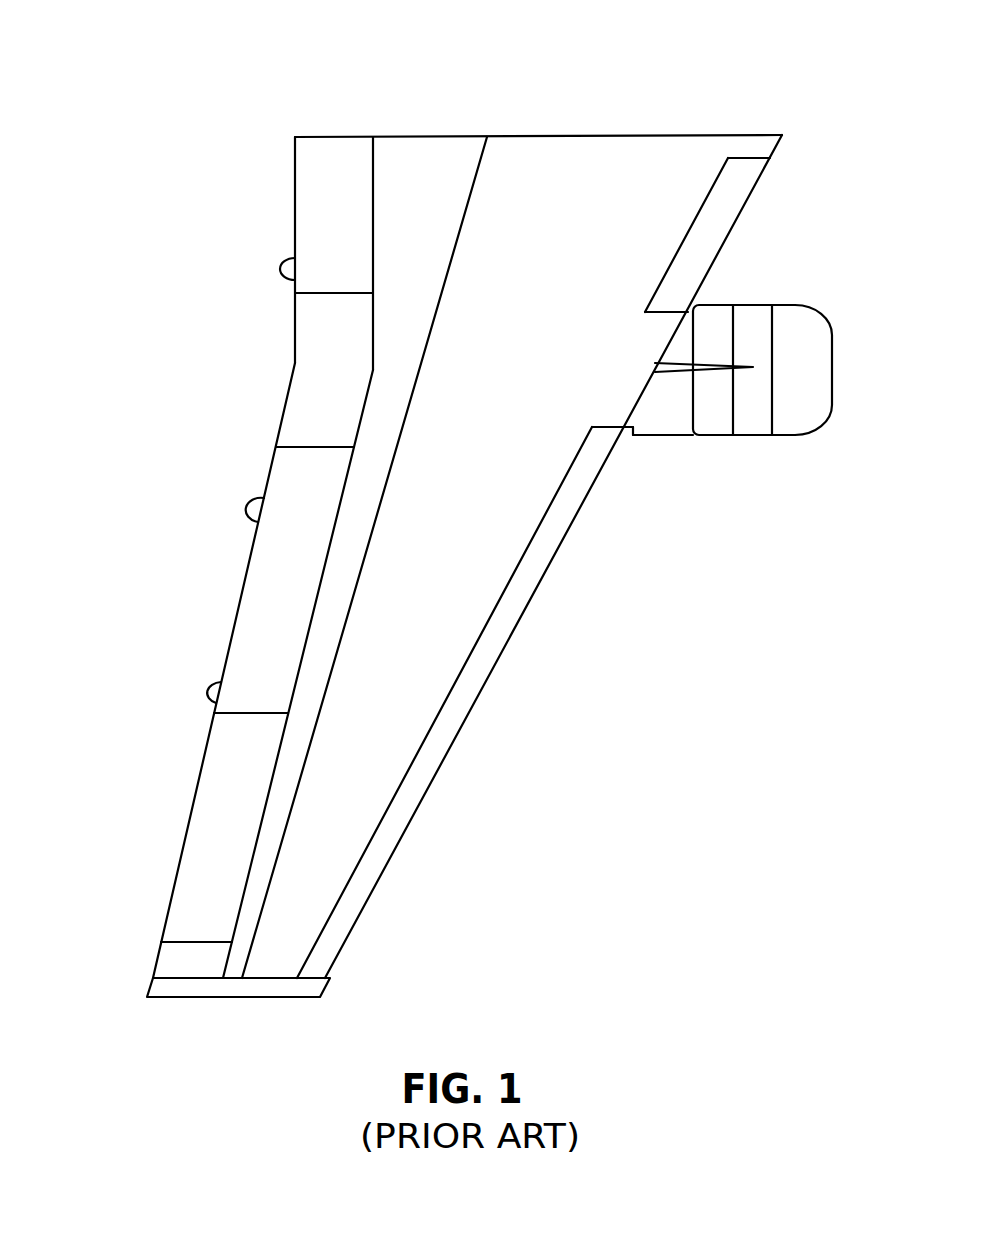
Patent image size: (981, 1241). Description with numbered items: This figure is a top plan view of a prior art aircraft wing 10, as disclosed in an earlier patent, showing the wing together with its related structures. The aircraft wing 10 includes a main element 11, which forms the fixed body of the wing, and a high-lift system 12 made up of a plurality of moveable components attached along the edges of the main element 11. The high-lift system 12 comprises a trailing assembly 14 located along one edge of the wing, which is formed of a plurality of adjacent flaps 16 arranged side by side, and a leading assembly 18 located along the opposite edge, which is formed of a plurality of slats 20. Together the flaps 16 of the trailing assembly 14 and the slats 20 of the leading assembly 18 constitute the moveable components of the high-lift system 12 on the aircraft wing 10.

The aircraft wing 10 is at (323, 110).
The main element 11 is at (572, 153).
The high-lift system 12 is at (137, 911).
The trailing assembly 14 is at (230, 457).
The flaps 16 is at (317, 203).
The leading assembly 18 is at (555, 617).
The slats 20 is at (712, 233).